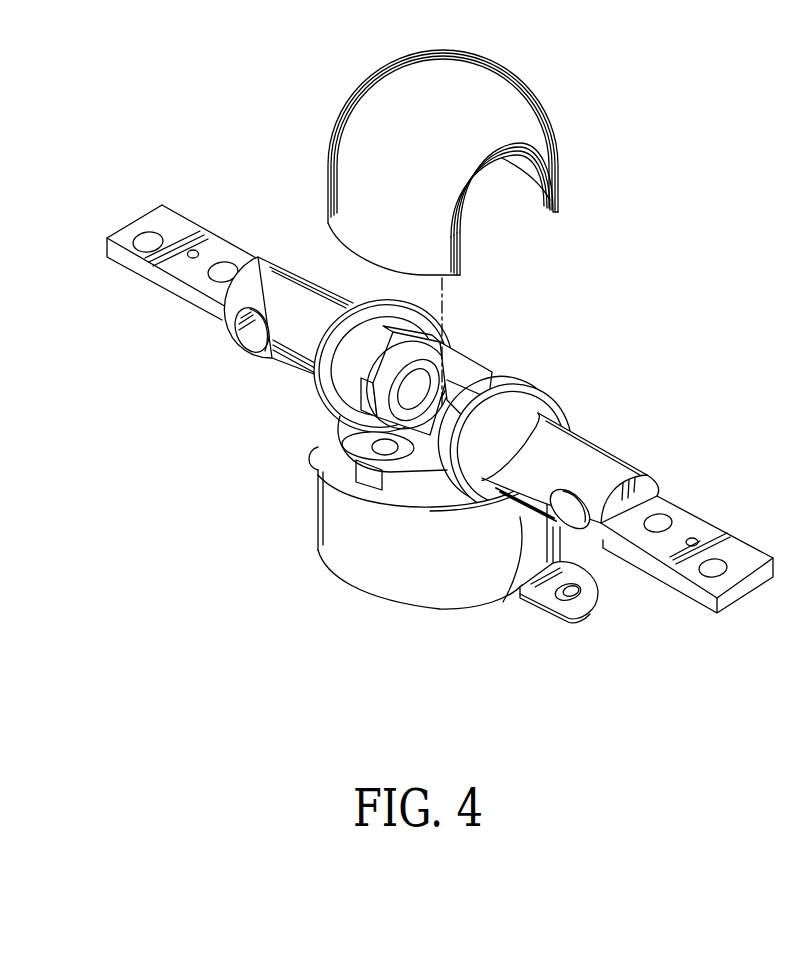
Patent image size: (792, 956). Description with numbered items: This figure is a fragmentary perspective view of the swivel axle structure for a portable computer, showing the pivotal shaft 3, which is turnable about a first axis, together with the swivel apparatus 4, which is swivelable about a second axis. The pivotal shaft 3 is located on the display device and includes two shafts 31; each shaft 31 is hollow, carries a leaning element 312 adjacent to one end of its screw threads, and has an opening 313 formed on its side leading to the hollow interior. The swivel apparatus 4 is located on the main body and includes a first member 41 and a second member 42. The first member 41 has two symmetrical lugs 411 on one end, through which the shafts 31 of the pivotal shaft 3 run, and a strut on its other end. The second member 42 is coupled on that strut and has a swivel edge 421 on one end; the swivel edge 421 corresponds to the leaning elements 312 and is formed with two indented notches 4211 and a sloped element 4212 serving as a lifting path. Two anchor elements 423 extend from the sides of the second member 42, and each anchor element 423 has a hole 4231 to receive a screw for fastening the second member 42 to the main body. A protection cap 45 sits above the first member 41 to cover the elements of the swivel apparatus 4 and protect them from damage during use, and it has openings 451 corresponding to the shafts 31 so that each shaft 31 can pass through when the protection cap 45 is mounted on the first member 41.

The pivotal shaft 3 is at (221, 288).
The shaft 31 is at (178, 225).
The leaning element 312 is at (300, 375).
The opening 313 is at (245, 341).
The swivel apparatus 4 is at (481, 491).
The first member 41 is at (353, 453).
The lug 411 is at (337, 382).
The second member 42 is at (477, 588).
The swivel edge 421 is at (440, 588).
The indented notch 4211 is at (430, 512).
The sloped element 4212 is at (517, 572).
The anchor element 423 is at (597, 616).
The hole 4231 is at (583, 593).
The protection cap 45 is at (472, 156).
The opening 451 is at (508, 203).